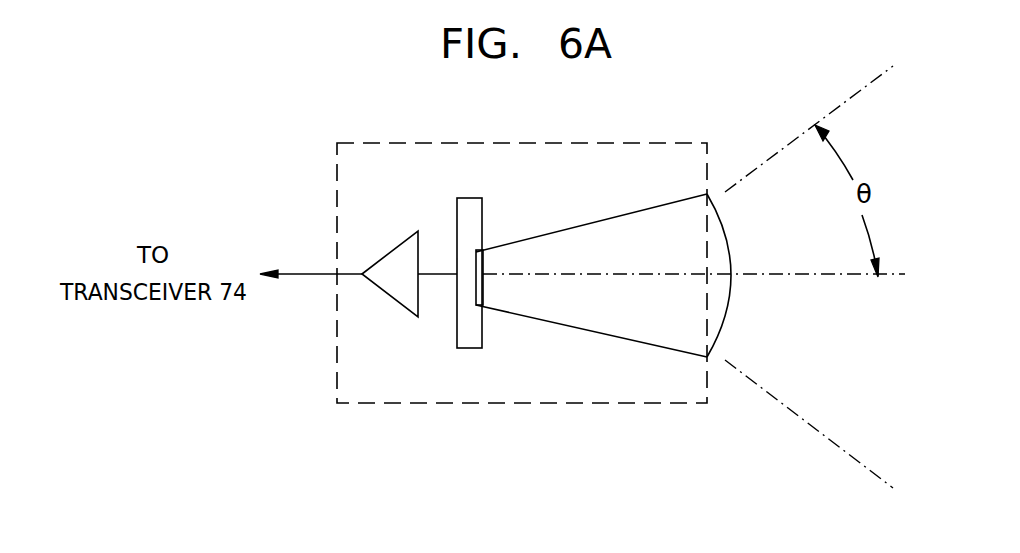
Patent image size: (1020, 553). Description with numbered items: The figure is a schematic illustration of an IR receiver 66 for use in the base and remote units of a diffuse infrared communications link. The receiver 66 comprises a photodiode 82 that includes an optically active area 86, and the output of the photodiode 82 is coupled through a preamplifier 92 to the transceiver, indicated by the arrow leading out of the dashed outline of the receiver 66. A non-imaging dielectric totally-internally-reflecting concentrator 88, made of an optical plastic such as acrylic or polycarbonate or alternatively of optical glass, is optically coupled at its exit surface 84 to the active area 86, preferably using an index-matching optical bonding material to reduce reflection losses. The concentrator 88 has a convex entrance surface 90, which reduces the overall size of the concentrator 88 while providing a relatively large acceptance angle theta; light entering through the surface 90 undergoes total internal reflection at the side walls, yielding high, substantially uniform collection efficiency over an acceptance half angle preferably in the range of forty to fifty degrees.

The IR receiver 66 is at (432, 143).
The photodiode 82 is at (456, 332).
The exit surface 84 is at (483, 267).
The optically active area 86 is at (458, 266).
The non-imaging dielectric totally-internally-reflecting concentrator 88 is at (579, 331).
The entrance surface 90 is at (728, 310).
The preamplifier 92 is at (381, 287).